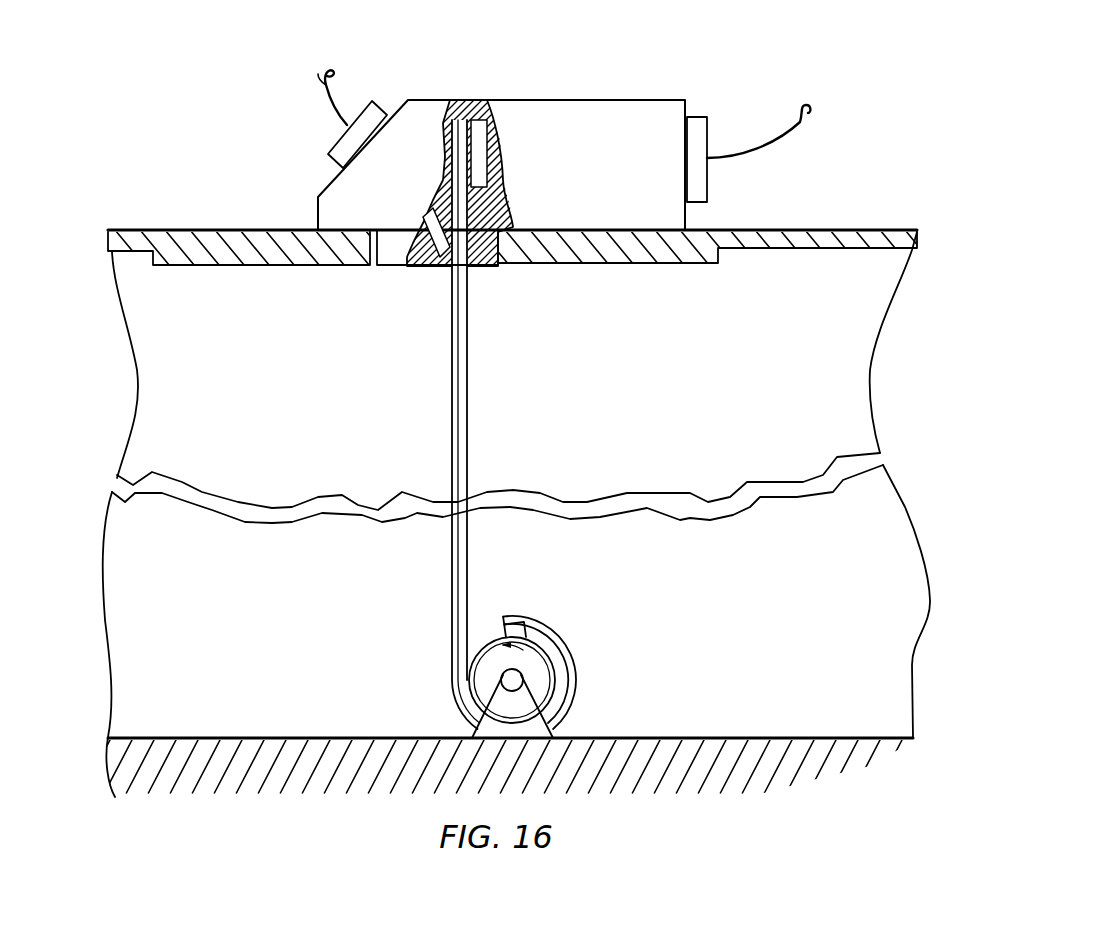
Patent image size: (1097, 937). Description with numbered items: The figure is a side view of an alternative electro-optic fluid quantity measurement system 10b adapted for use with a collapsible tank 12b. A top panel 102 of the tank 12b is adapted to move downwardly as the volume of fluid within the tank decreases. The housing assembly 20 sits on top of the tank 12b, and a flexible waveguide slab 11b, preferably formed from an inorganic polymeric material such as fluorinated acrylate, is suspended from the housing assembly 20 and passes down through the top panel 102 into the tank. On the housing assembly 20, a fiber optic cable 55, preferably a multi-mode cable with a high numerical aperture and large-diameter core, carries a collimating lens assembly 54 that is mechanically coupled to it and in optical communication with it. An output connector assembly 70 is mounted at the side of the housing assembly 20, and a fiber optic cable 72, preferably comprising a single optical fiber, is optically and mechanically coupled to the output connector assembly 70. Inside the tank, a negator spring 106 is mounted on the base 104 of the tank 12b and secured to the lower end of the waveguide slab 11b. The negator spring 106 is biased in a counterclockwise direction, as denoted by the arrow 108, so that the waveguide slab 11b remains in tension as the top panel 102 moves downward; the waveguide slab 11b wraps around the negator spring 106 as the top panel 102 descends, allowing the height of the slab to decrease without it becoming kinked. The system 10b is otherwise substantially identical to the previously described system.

The electro-optic fluid quantity measurement system 10b is at (860, 108).
The flexible waveguide slab 11b is at (468, 390).
The collapsible tank 12b is at (918, 218).
The housing assembly 20 is at (556, 84).
The collimating lens assembly 54 is at (372, 120).
The fiber optic cable 55 is at (330, 110).
The output connector assembly 70 is at (695, 115).
The fiber optic cable 72 is at (759, 147).
The top panel 102 is at (808, 230).
The base 104 is at (632, 735).
The negator spring 106 is at (483, 630).
The arrow 108 is at (537, 652).